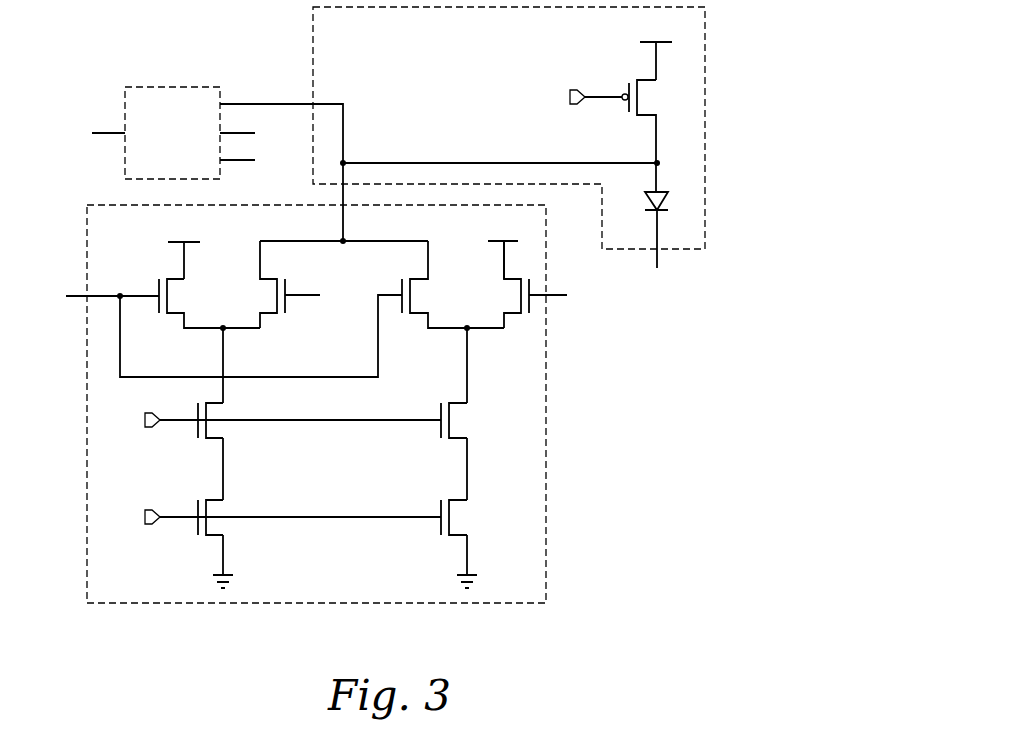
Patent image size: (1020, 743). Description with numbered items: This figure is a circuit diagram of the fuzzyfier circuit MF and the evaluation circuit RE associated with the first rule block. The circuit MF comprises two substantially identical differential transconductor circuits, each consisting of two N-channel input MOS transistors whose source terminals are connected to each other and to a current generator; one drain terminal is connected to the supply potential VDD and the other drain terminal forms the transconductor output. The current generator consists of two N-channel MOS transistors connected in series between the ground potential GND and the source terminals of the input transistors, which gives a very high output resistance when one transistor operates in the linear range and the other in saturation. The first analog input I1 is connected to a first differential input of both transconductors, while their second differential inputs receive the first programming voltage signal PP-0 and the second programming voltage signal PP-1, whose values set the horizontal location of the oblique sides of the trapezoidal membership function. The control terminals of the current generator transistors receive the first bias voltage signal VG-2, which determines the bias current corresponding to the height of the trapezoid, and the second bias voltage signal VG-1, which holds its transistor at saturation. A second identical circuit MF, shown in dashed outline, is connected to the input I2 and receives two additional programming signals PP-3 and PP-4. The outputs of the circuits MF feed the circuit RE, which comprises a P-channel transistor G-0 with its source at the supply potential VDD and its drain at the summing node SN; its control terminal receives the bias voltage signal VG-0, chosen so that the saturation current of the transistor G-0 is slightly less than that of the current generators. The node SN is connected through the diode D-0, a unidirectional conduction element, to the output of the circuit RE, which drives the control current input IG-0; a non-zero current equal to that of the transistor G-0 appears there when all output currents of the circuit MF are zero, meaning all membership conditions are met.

The fuzzyfier circuit MF is at (174, 90).
The evaluation circuit RE is at (702, 143).
The first programming voltage signal PP-0 is at (318, 296).
The second programming voltage signal PP-1 is at (560, 294).
The programming signal PP-3 is at (256, 133).
The programming signal PP-4 is at (256, 160).
The transistor G-0 is at (659, 136).
The diode D-0 is at (642, 230).
The summing node SN is at (440, 172).
The supply potential VDD is at (421, 148).
The ground potential GND is at (324, 585).
The bias voltage signal VG-0 is at (571, 97).
The second bias voltage signal VG-1 is at (280, 420).
The first bias voltage signal VG-2 is at (280, 517).
The first analog input I1 is at (227, 332).
The input I2 is at (97, 133).
The control current input IG-0 is at (649, 285).